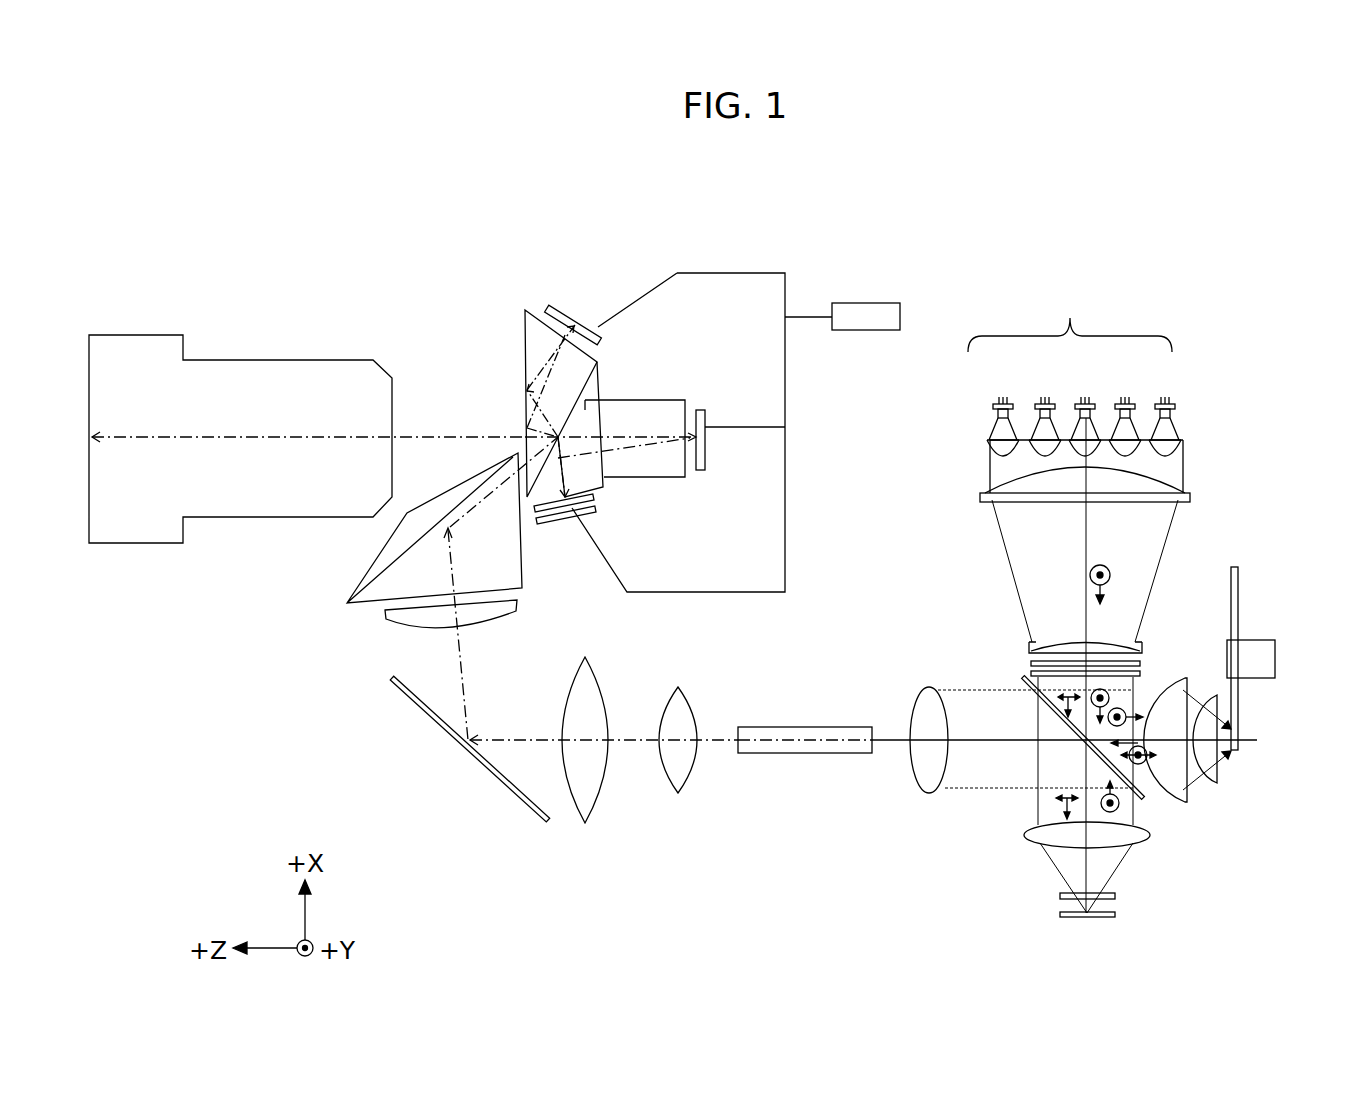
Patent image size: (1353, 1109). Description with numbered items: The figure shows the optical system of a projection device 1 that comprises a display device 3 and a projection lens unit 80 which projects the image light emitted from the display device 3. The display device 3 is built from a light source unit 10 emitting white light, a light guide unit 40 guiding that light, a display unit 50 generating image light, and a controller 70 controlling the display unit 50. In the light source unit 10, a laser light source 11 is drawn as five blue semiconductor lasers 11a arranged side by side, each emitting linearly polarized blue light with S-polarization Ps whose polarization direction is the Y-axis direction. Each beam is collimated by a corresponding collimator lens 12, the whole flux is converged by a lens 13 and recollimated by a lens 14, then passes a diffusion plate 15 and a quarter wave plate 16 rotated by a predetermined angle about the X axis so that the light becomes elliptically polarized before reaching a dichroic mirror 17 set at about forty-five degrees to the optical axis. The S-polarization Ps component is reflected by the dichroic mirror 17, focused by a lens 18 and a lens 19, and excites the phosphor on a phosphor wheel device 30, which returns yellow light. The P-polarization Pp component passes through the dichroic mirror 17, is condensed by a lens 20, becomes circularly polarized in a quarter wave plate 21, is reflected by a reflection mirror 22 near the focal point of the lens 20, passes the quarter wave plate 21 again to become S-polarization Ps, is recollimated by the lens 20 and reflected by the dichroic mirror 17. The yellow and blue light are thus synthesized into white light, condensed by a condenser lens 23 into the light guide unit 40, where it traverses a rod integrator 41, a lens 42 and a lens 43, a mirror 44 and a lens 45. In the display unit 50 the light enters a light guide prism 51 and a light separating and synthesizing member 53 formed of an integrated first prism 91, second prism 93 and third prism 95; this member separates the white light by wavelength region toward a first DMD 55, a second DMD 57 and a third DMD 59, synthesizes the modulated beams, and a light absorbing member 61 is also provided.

The projection device 1 is at (1138, 222).
The display device 3 is at (1027, 277).
The light source unit 10 is at (1170, 322).
The laser light source 11 is at (1070, 320).
The blue semiconductor laser 11a is at (1008, 396).
The collimator lens 12 is at (990, 447).
The lens 13 is at (983, 496).
The lens 14 is at (1030, 645).
The diffusion plate 15 is at (1030, 663).
The quarter wave plate 16 is at (1030, 673).
The dichroic mirror 17 is at (1024, 681).
The lens 18 is at (1147, 800).
The lens 19 is at (1210, 785).
The lens 20 is at (1027, 840).
The quarter wave plate 21 is at (1060, 895).
The reflection mirror 22 is at (1117, 915).
The condenser lens 23 is at (920, 765).
The phosphor wheel device 30 is at (1240, 578).
The light guide unit 40 is at (497, 852).
The rod integrator 41 is at (780, 748).
The lens 42 is at (678, 785).
The lens 43 is at (585, 818).
The mirror 44 is at (513, 795).
The lens 45 is at (507, 607).
The display unit 50 is at (677, 225).
The light guide prism 51 is at (382, 563).
The light separating and synthesizing member 53 is at (698, 350).
The DMD 55 is at (558, 312).
The DMD 57 is at (592, 510).
The DMD 59 is at (705, 415).
The light absorbing member 61 is at (597, 496).
The controller 70 is at (873, 313).
The projection lens unit 80 is at (257, 382).
The first prism 91 is at (577, 365).
The second prism 93 is at (580, 417).
The third prism 95 is at (677, 470).
The S-polarization Ps is at (1103, 565).
The P-polarization Pp is at (1052, 698).